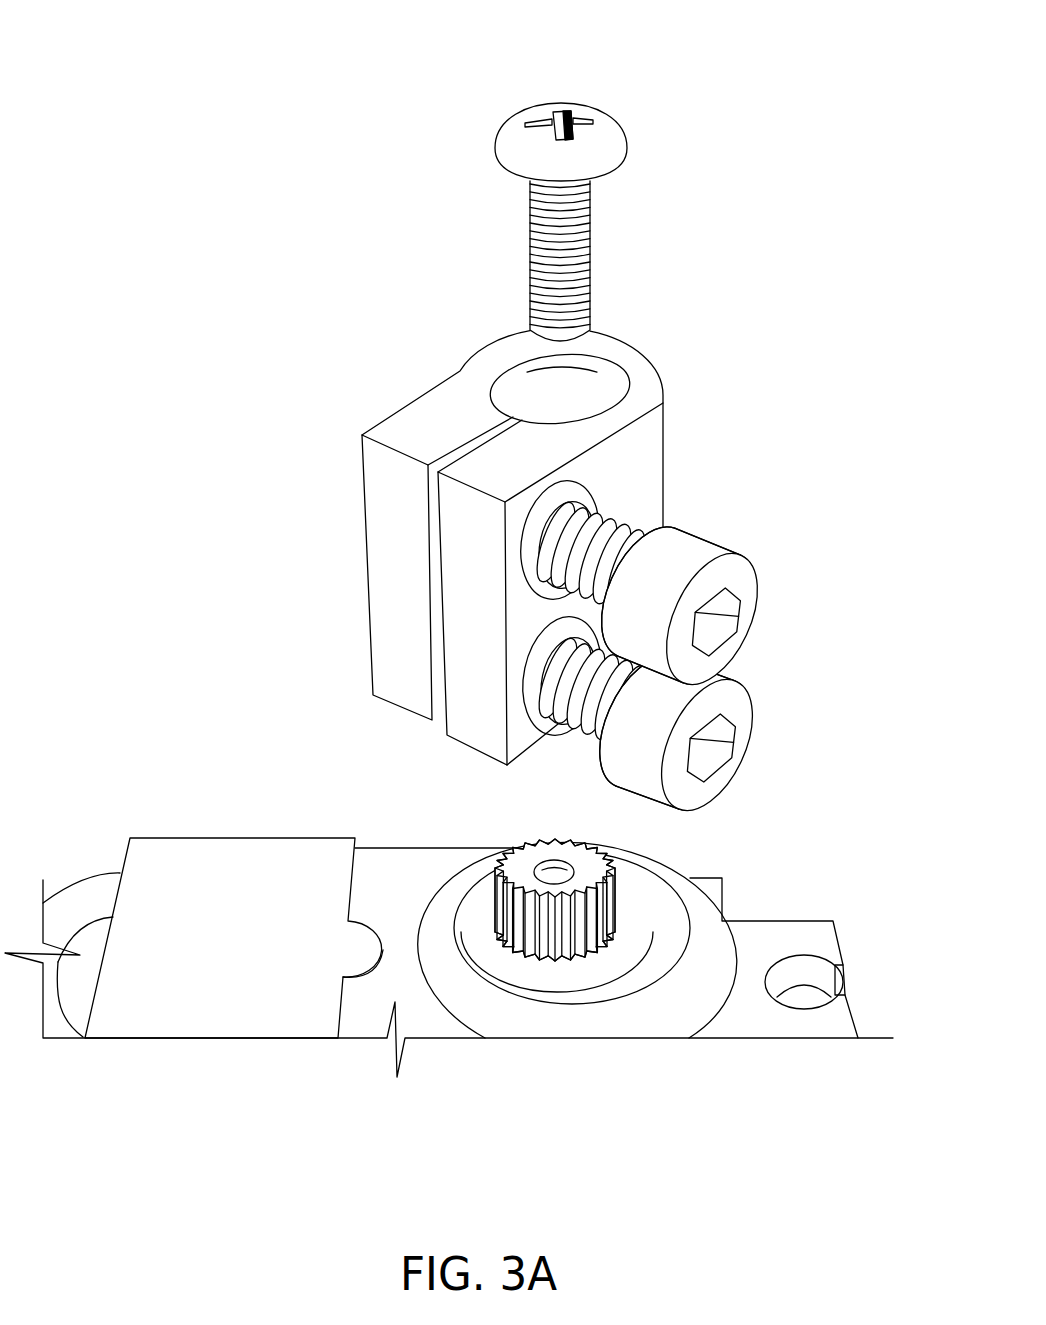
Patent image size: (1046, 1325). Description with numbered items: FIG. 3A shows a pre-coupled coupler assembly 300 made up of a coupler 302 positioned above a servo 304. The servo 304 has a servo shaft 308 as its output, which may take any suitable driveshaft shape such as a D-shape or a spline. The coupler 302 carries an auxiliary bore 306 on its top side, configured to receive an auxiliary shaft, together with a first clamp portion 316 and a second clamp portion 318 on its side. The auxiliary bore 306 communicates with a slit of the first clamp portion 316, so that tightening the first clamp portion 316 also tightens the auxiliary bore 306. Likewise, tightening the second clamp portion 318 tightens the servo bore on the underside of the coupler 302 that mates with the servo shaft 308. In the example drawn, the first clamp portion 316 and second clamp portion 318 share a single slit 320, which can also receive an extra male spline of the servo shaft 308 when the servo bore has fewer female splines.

The assembly 300 is at (464, 541).
The coupler 302 is at (501, 535).
The servo 304 is at (843, 968).
The auxiliary bore 306 is at (603, 380).
The servo shaft 308 is at (600, 850).
The first clamp portion 316 is at (567, 513).
The second clamp portion 318 is at (563, 720).
The slit 320 is at (441, 716).